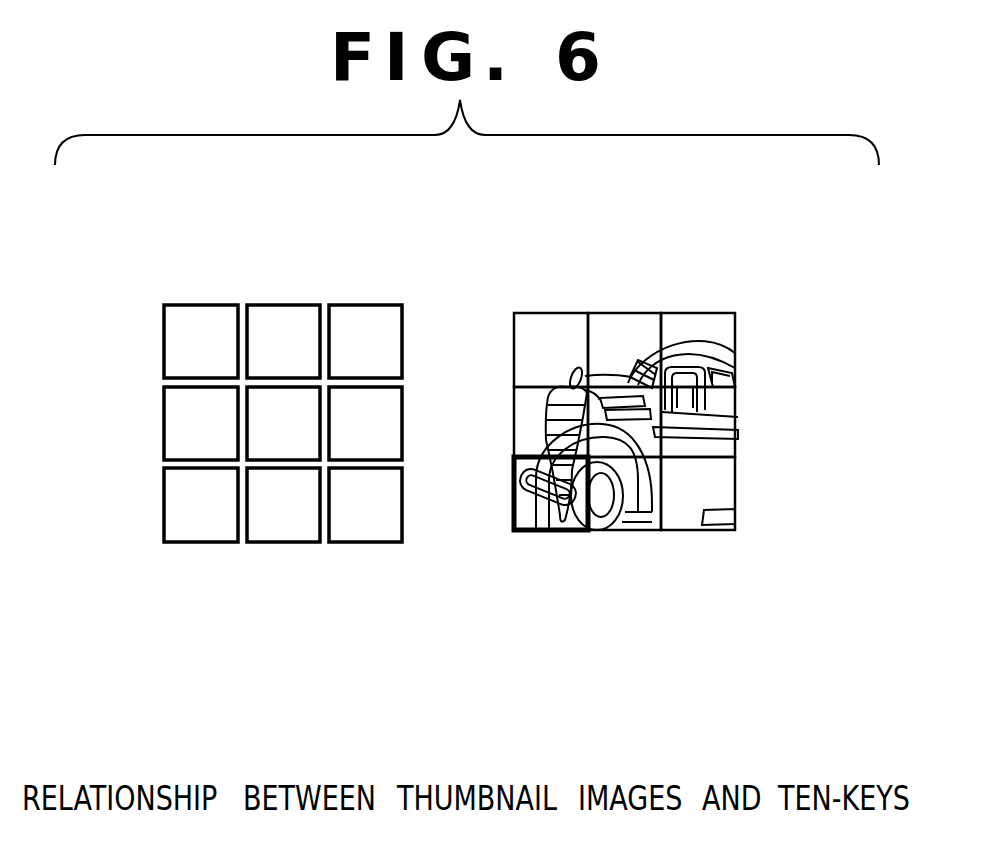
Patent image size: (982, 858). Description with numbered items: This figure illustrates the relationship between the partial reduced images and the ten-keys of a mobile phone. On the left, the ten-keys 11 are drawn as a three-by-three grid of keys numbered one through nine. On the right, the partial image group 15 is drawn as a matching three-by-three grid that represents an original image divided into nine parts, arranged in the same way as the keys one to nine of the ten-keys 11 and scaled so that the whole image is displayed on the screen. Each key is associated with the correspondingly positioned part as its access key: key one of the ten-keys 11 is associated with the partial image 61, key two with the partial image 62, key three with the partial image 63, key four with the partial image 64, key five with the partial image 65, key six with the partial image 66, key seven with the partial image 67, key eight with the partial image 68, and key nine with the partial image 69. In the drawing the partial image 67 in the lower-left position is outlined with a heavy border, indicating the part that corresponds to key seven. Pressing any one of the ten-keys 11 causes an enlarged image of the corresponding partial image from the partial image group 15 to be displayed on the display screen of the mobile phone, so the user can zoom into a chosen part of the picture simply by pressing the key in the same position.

The ten-keys 11 is at (200, 305).
The partial image group 15 is at (588, 313).
The partial image 61 is at (545, 323).
The partial image 62 is at (622, 323).
The partial image 63 is at (697, 323).
The partial image 64 is at (523, 415).
The partial image 65 is at (690, 343).
The partial image 66 is at (723, 437).
The partial image 67 is at (548, 530).
The partial image 68 is at (603, 533).
The partial image 69 is at (723, 488).